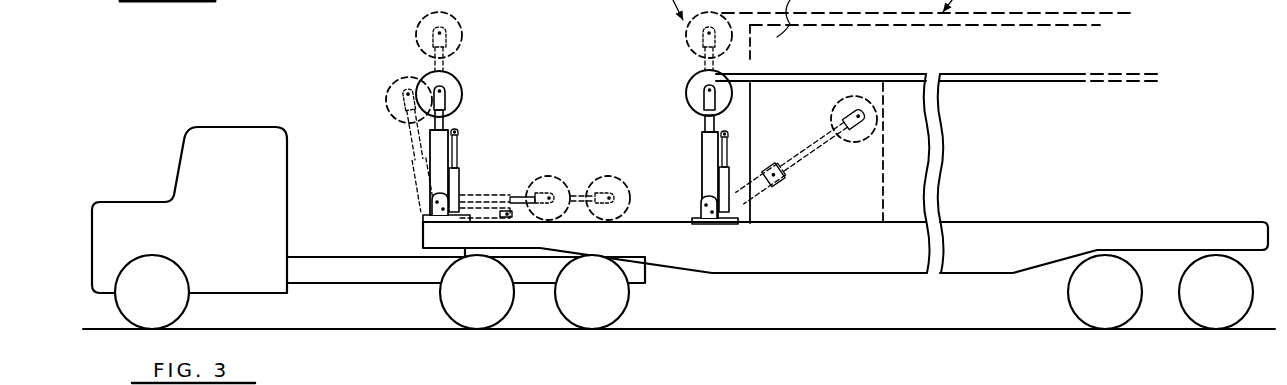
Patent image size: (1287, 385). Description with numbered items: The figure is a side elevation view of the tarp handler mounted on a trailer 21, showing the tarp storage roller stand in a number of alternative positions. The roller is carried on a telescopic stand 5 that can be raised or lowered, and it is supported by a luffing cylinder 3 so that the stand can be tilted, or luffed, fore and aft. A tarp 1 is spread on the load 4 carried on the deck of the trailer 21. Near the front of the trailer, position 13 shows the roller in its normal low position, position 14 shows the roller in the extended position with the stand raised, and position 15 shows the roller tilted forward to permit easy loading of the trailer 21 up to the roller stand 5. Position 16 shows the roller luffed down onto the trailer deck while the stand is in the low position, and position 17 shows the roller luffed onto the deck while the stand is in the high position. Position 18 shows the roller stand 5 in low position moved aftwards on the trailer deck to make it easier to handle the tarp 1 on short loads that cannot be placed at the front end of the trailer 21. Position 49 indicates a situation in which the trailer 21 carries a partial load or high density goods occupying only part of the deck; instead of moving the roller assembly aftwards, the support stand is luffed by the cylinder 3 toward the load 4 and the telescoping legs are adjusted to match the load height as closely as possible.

The tarp 1 is at (832, 74).
The luffing cylinder 3 is at (455, 180).
The load 4 is at (783, 98).
The telescopic stand 5 is at (435, 178).
The tarp storage roller in normal low position 13 is at (473, 90).
The tarp storage roller in extended position 14 is at (466, 28).
The tarp storage roller tilted forward 15 is at (390, 85).
The tarp storage roller luffed in low position 16 is at (551, 172).
The tarp storage roller luffed in high position 17 is at (611, 172).
The roller stand moved aftwards in low position 18 is at (683, 92).
The trailer 21 is at (670, 199).
The partial or high density load situation 49 is at (853, 147).